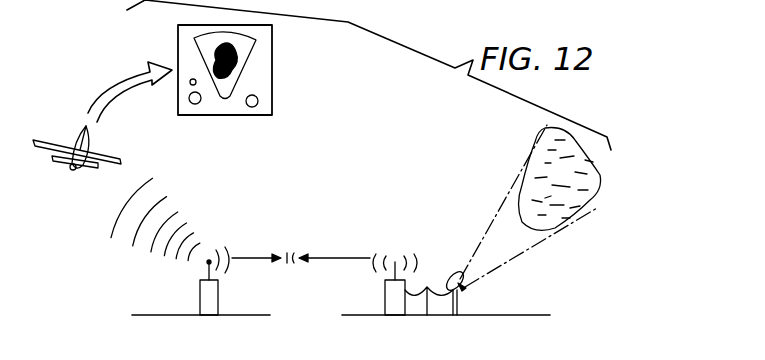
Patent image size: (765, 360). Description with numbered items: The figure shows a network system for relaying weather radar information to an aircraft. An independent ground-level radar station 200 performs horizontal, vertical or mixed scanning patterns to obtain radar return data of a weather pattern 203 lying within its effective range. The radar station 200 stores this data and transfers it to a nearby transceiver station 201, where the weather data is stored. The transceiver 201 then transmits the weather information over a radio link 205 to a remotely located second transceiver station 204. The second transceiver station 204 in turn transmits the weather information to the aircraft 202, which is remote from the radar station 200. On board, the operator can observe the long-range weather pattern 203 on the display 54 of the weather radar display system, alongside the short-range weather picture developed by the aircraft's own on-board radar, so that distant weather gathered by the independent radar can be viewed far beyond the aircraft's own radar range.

The display 54 is at (178, 42).
The weather pattern 203 is at (236, 57).
The aircraft 202 is at (89, 140).
The second transceiver station 204 is at (256, 303).
The radio link 205 is at (302, 258).
The transceiver station 201 is at (397, 300).
The radar station 200 is at (459, 294).